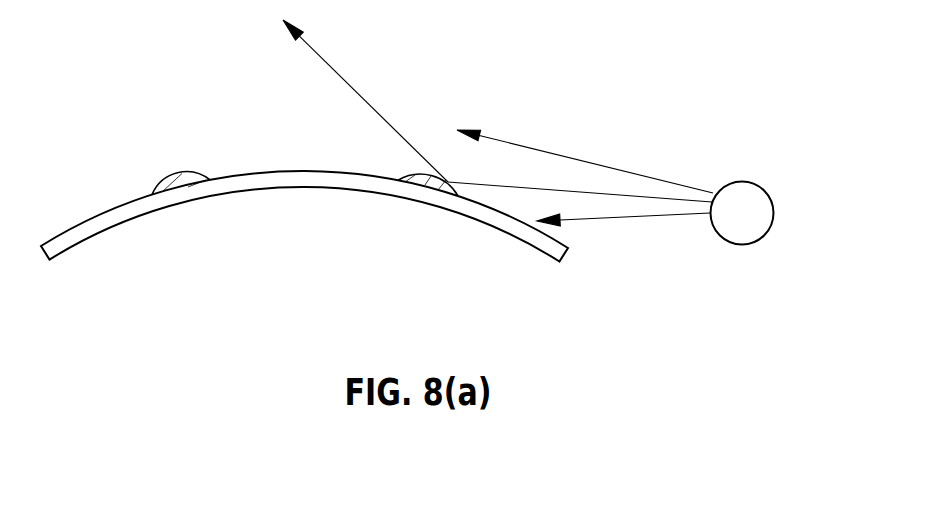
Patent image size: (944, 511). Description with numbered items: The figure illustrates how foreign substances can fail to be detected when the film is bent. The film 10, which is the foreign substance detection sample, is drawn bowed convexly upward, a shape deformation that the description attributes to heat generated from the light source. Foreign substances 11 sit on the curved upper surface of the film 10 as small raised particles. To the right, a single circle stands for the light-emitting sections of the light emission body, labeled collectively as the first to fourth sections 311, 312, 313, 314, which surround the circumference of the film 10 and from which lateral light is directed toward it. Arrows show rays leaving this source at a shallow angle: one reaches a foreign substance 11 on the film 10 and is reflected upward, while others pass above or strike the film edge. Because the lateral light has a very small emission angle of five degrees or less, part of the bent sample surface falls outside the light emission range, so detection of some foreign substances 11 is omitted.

The film 10 is at (82, 228).
The foreign substances 11 is at (168, 177).
The first section 311 is at (743, 261).
The second section 312 is at (743, 261).
The third section 313 is at (743, 261).
The fourth section 314 is at (742, 232).